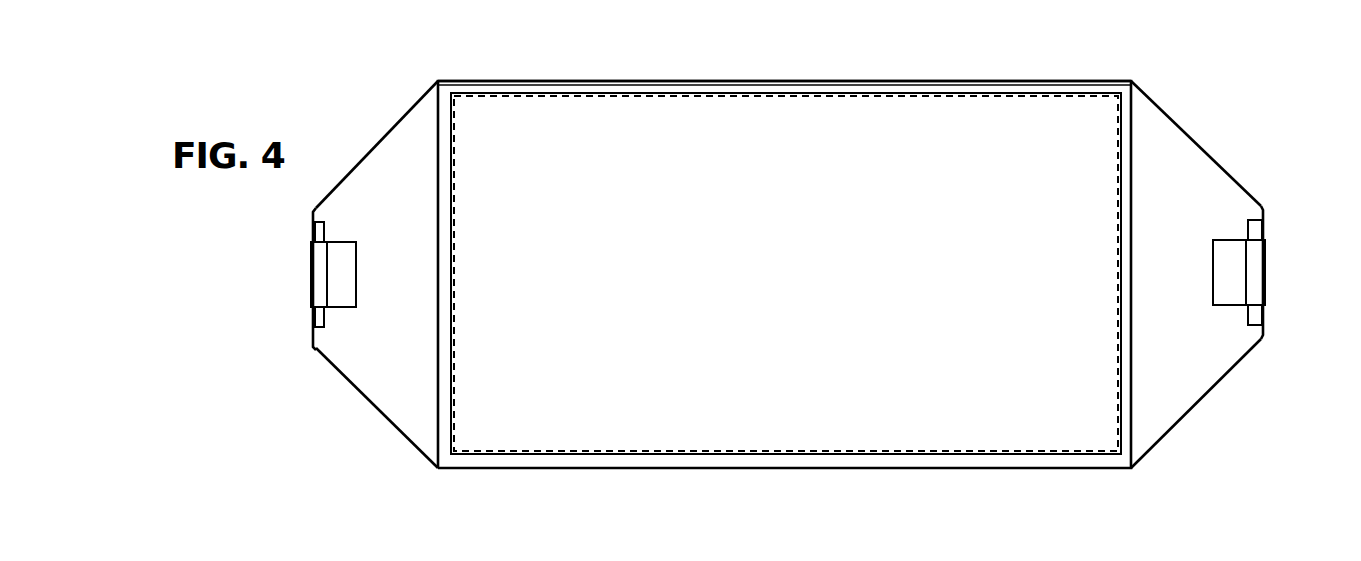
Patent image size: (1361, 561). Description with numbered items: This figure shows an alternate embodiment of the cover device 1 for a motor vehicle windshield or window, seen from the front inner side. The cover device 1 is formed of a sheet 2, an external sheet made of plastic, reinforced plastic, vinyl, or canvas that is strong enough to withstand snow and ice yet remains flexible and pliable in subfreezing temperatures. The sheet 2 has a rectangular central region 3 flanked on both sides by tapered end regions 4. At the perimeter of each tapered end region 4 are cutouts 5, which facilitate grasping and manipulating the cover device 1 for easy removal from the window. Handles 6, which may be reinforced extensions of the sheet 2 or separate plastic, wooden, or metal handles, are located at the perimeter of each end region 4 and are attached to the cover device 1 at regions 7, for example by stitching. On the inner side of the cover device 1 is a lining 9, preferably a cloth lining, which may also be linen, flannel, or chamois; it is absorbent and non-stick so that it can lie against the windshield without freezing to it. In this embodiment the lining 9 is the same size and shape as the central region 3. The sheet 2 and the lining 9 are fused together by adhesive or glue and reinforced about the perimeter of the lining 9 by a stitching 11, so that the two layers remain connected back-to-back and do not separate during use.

The cover device 1 is at (392, 445).
The sheet 2 is at (610, 80).
The central region 3 is at (1027, 110).
The tapered end regions 4 is at (390, 165).
The cutouts 5 is at (348, 262).
The handles 6 is at (320, 282).
The regions 7 is at (318, 233).
The lining 9 is at (740, 120).
The stitching 11 is at (918, 93).